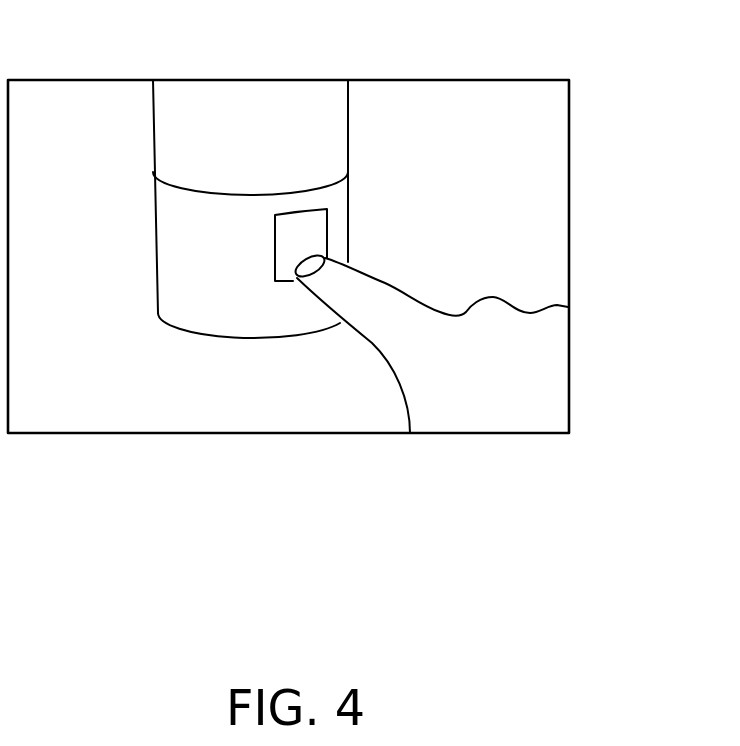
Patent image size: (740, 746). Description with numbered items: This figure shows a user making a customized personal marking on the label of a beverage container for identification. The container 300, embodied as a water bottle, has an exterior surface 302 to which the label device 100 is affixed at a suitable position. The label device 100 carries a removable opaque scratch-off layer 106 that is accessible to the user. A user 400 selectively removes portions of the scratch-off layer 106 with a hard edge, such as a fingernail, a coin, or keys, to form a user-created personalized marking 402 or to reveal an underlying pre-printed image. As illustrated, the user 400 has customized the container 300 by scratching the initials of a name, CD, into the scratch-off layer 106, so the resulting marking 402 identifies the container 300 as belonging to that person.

The label device 100 is at (142, 304).
The scratch-off layer 106 is at (292, 282).
The container 300 is at (141, 112).
The exterior surface 302 is at (300, 91).
The user 400 is at (550, 374).
The user-created personalized marking 402 is at (322, 249).